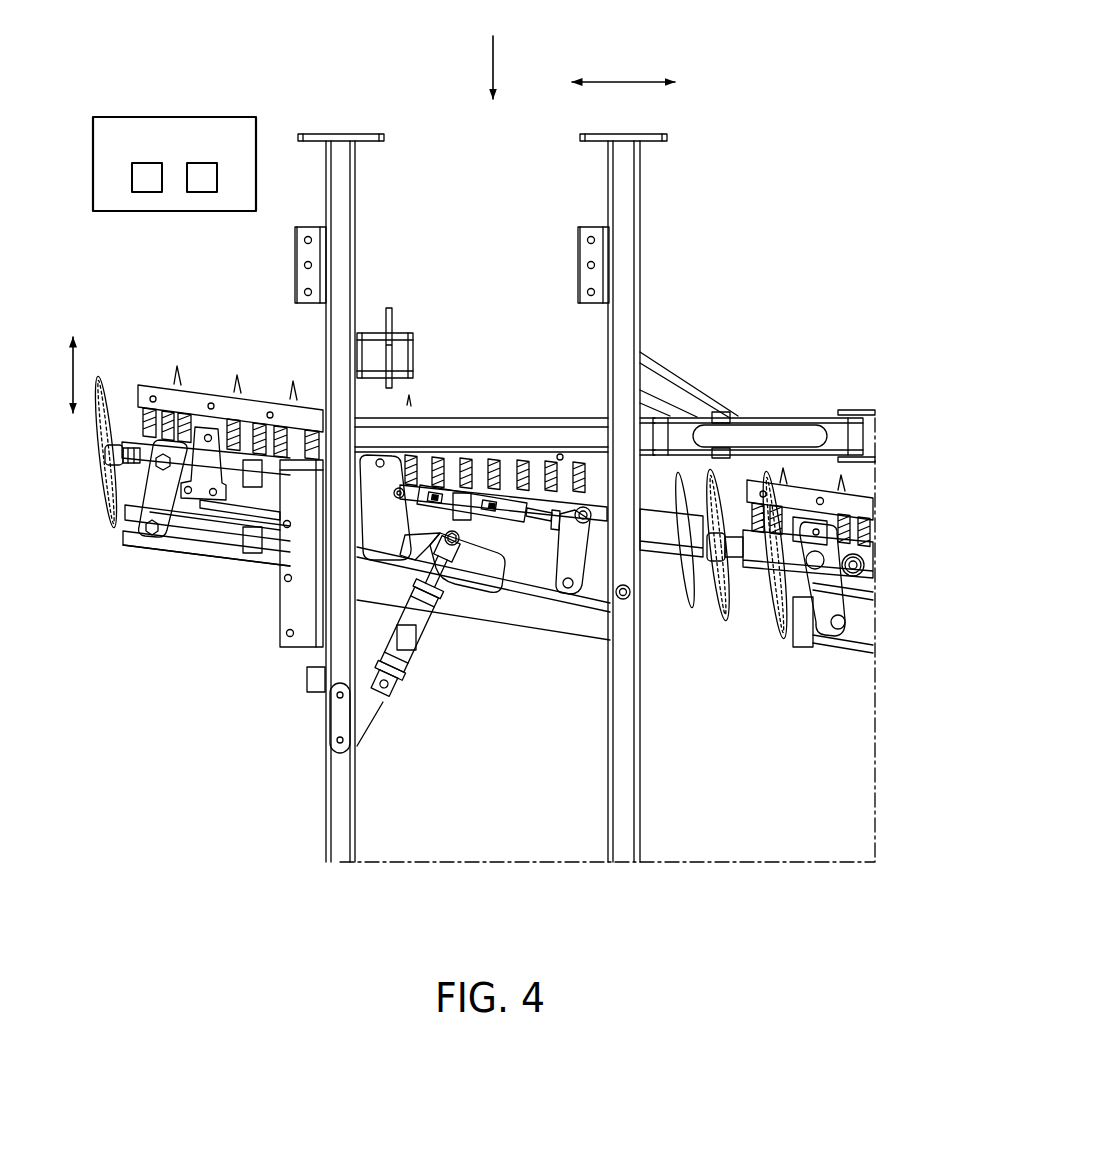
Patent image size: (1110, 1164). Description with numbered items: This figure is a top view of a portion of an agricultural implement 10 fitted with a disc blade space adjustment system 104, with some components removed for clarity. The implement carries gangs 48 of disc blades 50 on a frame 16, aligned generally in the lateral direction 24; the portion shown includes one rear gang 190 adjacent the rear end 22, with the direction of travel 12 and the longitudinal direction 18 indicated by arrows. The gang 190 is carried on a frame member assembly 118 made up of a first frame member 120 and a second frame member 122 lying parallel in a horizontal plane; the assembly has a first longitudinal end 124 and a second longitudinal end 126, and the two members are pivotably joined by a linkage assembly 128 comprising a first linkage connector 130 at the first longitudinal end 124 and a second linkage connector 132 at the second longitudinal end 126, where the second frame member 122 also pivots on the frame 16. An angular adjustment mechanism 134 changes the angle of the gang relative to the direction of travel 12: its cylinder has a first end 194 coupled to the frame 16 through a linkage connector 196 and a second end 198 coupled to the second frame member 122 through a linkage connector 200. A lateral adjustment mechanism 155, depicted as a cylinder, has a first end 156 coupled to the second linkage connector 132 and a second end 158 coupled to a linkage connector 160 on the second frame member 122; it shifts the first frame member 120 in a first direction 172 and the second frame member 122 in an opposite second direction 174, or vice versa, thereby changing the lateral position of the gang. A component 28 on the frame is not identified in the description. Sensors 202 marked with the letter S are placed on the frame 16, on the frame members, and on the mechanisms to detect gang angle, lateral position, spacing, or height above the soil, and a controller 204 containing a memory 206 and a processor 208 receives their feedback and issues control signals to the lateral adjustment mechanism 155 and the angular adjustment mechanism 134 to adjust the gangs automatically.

The agricultural implement 10 is at (202, 26).
The direction of travel 12 is at (467, 67).
The frame 16 is at (445, 501).
The longitudinal direction 18 is at (89, 368).
The rear end 22 is at (482, 84).
The lateral direction 24 is at (623, 56).
The mounting bracket 28 is at (295, 718).
The gang 48 is at (206, 578).
The disc blade 50 is at (102, 467).
The disc blade space adjustment system 104 is at (500, 598).
The frame member assembly 118 is at (281, 556).
The first frame member 120 is at (209, 415).
The second frame member 122 is at (234, 567).
The first longitudinal end 124 is at (184, 554).
The second longitudinal end 126 is at (768, 574).
The linkage assembly 128 is at (357, 620).
The first linkage connector 130 is at (116, 488).
The second linkage connector 132 is at (587, 448).
The angular adjustment mechanism 134 is at (435, 618).
The lateral adjustment mechanism 155 is at (488, 441).
The first end 156 is at (557, 487).
The second end 158 is at (385, 374).
The linkage connector 160 is at (349, 452).
The first direction 172 is at (215, 587).
The second direction 174 is at (230, 384).
The gang 190 is at (159, 681).
The first end 194 is at (379, 637).
The linkage connector 196 is at (408, 724).
The second end 198 is at (432, 463).
The linkage connector 200 is at (463, 592).
The sensor 202 is at (355, 528).
The controller 204 is at (176, 146).
The memory 206 is at (139, 210).
The processor 208 is at (194, 210).